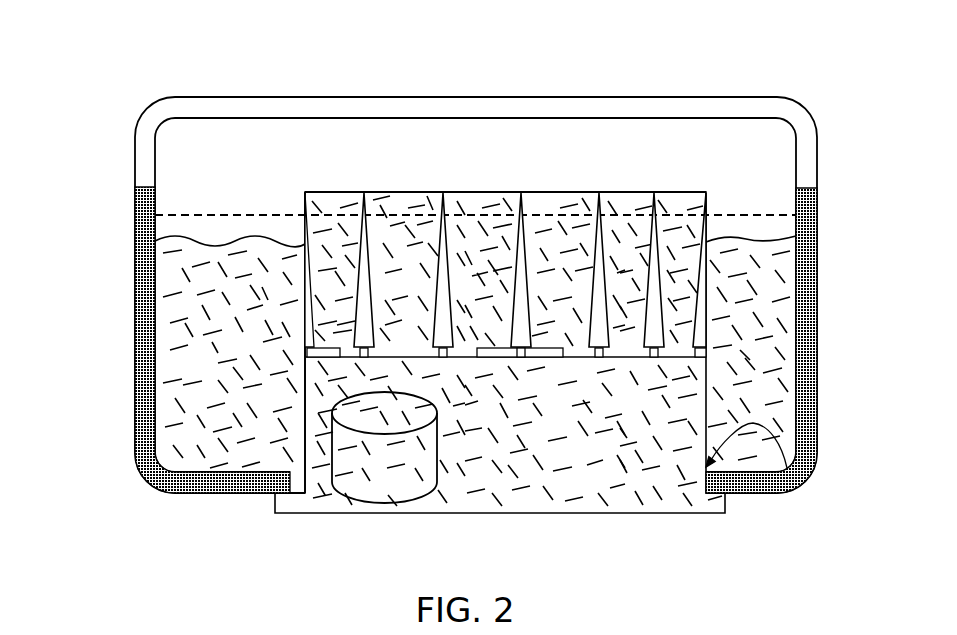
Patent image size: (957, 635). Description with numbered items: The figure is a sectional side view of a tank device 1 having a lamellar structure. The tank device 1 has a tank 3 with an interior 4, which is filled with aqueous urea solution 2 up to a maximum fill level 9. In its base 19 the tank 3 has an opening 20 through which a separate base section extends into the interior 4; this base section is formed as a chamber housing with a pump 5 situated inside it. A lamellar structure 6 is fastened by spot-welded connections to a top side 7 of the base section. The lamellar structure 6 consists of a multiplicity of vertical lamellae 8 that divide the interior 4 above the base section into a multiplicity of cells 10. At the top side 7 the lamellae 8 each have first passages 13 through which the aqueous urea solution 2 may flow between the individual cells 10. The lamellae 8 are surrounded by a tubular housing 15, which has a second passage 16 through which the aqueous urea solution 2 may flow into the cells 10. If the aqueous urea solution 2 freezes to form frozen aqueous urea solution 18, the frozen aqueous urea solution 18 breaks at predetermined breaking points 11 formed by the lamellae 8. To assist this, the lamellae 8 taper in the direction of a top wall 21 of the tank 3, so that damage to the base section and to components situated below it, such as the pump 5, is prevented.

The tank device 1 is at (84, 52).
The aqueous urea solution 2 is at (183, 371).
The tank 3 is at (136, 414).
The interior 4 is at (482, 180).
The pump 5 is at (383, 503).
The lamellar structure 6 is at (282, 207).
The top side 7 is at (405, 335).
The lamellae 8 is at (302, 243).
The maximum fill level 9 is at (752, 214).
The cells 10 is at (539, 226).
The predetermined breaking points 11 is at (438, 242).
The first passages 13 is at (302, 323).
The tubular housing 15 is at (628, 192).
The second passage 16 is at (543, 357).
The frozen aqueous urea solution 18 is at (788, 290).
The base 19 is at (755, 494).
The opening 20 is at (787, 468).
The top wall 21 is at (147, 110).